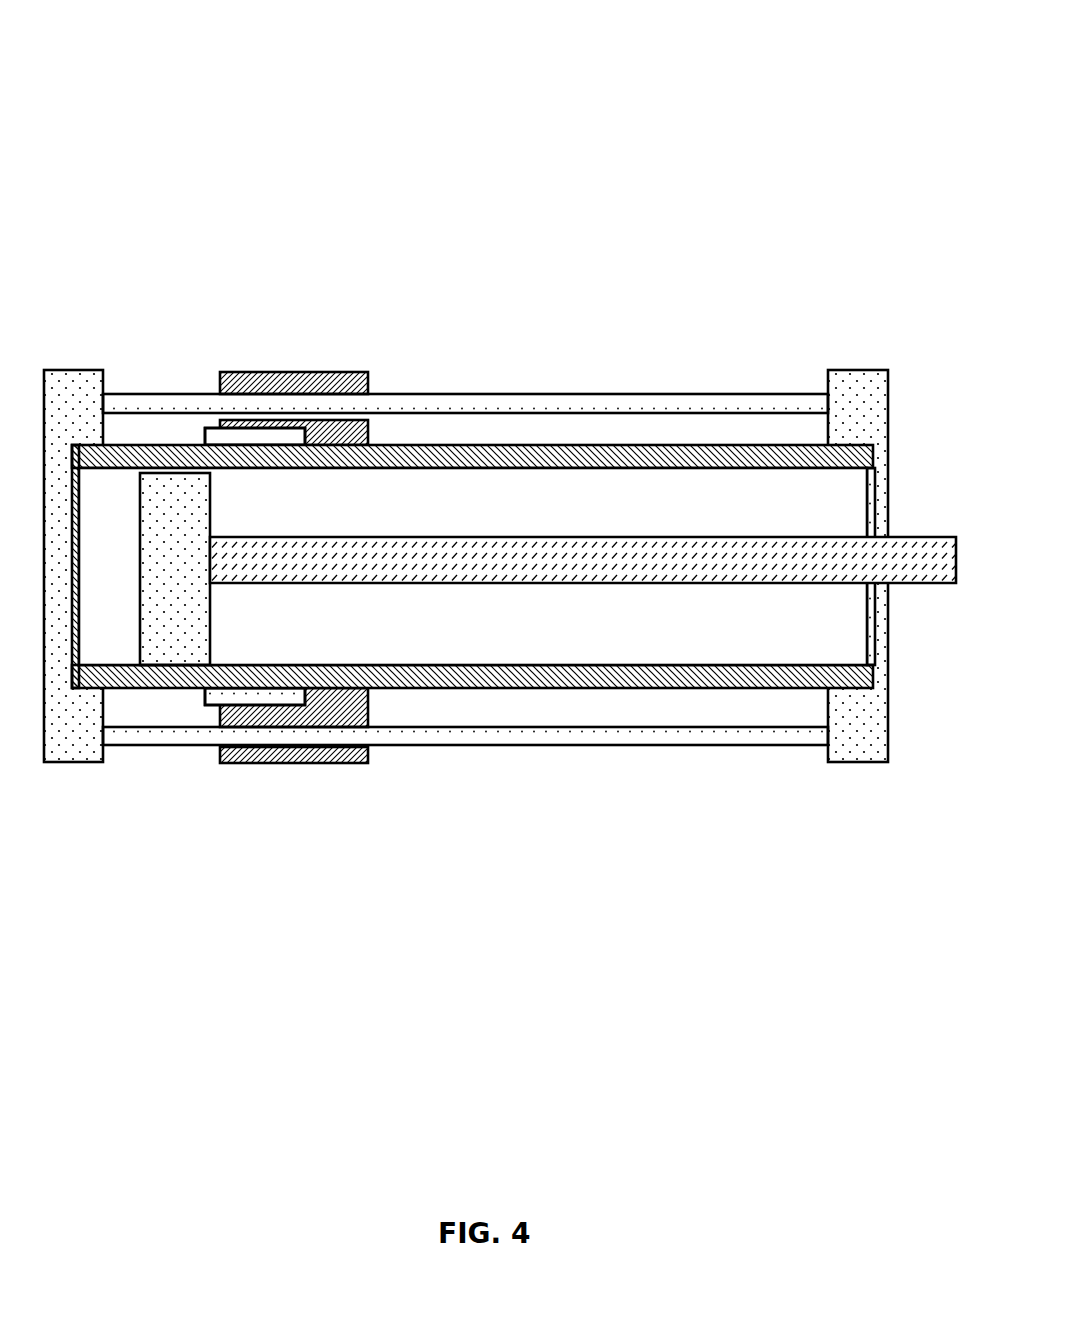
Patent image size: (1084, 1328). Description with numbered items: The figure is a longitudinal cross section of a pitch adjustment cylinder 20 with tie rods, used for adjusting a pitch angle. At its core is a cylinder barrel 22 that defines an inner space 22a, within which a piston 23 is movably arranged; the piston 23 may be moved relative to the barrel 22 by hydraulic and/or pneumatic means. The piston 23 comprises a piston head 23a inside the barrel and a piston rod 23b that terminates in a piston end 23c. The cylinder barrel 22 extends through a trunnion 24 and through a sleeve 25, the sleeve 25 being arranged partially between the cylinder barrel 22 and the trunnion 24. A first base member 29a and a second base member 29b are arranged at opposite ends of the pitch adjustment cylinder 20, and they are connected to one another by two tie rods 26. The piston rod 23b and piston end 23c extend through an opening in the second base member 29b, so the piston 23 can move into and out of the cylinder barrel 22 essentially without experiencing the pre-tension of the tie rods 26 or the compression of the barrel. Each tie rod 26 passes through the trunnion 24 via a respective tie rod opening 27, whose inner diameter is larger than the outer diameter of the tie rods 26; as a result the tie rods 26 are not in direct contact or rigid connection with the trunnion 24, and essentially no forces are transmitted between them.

The pitch adjustment cylinder 20 is at (500, 408).
The cylinder barrel 22 is at (473, 486).
The inner space 22a is at (645, 500).
The piston 23 is at (548, 549).
The piston head 23a is at (175, 569).
The piston rod 23b is at (583, 560).
The piston end 23c is at (950, 532).
The trunnion 24 is at (295, 370).
The sleeve 25 is at (207, 428).
The tie rods 26 is at (445, 400).
The tie rod openings 27 is at (373, 394).
The first base member 29a is at (73, 363).
The second base member 29b is at (855, 362).